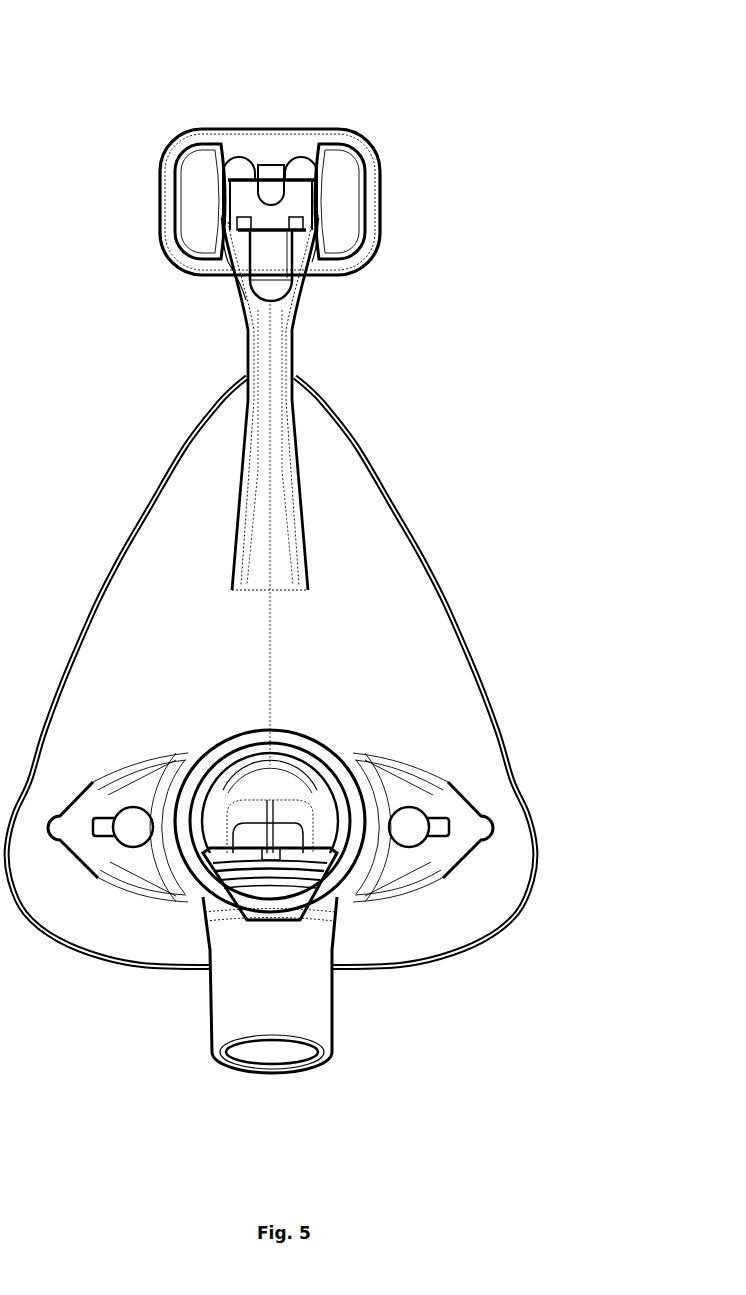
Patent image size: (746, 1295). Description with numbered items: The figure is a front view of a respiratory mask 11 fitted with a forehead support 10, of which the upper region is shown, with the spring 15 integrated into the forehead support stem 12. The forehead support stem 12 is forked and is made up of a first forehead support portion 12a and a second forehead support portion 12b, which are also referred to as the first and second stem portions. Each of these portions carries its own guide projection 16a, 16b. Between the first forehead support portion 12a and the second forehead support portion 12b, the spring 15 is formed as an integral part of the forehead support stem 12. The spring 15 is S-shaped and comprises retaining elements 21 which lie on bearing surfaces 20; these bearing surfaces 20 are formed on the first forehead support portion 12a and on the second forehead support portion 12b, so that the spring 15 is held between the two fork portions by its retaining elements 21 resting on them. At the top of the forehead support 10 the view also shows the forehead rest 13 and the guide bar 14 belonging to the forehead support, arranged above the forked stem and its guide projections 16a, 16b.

The forehead support 10 is at (503, 245).
The mask frame 11 is at (449, 562).
The forehead support stem 12 is at (293, 375).
The first forehead support portion 12a is at (225, 218).
The second forehead support portion 12b is at (320, 220).
The forehead rest 13 is at (321, 140).
The guide bar 14 is at (332, 176).
The spring 15 is at (282, 264).
The guide projection 16a is at (238, 162).
The guide projection 16b is at (303, 162).
The bearing surfaces 20 is at (220, 270).
The retaining elements 21 is at (183, 262).